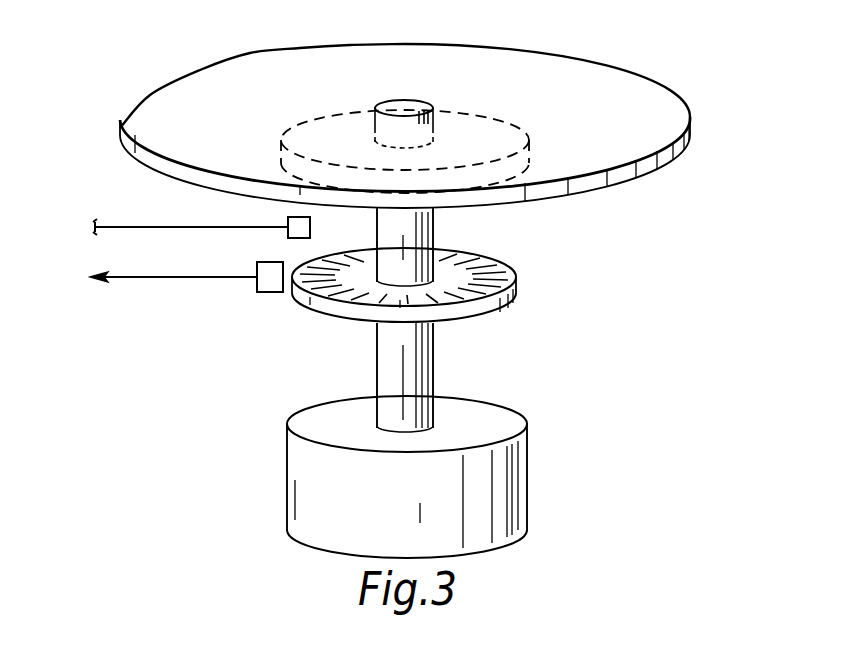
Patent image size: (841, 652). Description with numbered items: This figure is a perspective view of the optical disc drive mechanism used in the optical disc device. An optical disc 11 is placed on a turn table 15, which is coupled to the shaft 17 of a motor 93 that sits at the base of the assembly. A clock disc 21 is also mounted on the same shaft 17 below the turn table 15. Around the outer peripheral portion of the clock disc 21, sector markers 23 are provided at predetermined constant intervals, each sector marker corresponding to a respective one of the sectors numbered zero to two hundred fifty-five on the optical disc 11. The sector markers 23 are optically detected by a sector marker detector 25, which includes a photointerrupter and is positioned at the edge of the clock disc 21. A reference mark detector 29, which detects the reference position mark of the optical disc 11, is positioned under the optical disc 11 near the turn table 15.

The optical disc 11 is at (613, 92).
The turn table 15 is at (313, 120).
The shaft 17 is at (437, 357).
The clock disc 21 is at (434, 269).
The sector markers 23 is at (518, 269).
The sector marker detector 25 is at (257, 284).
The reference mark detector 29 is at (288, 230).
The motor 93 is at (508, 475).